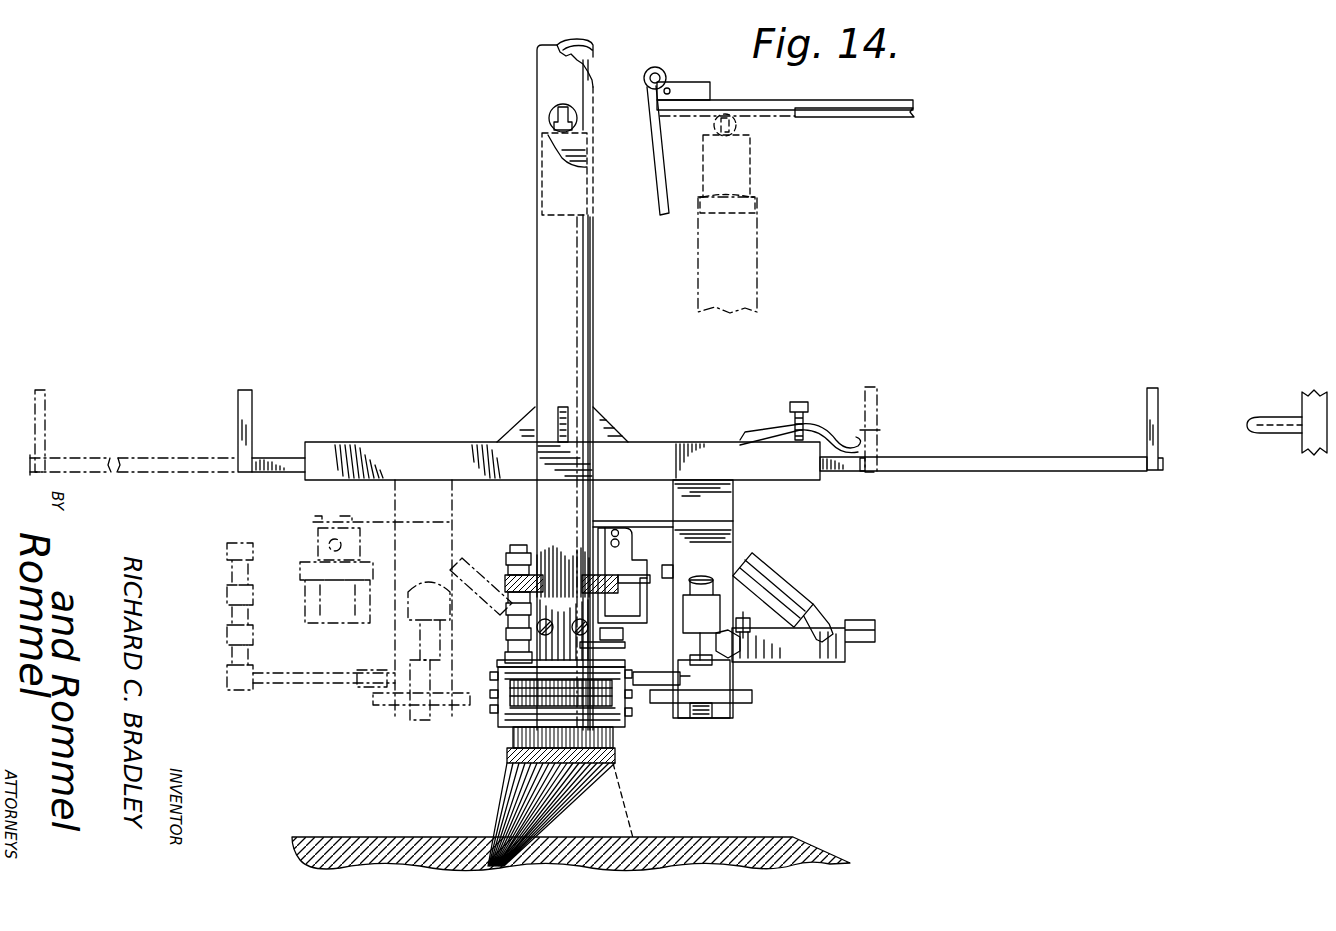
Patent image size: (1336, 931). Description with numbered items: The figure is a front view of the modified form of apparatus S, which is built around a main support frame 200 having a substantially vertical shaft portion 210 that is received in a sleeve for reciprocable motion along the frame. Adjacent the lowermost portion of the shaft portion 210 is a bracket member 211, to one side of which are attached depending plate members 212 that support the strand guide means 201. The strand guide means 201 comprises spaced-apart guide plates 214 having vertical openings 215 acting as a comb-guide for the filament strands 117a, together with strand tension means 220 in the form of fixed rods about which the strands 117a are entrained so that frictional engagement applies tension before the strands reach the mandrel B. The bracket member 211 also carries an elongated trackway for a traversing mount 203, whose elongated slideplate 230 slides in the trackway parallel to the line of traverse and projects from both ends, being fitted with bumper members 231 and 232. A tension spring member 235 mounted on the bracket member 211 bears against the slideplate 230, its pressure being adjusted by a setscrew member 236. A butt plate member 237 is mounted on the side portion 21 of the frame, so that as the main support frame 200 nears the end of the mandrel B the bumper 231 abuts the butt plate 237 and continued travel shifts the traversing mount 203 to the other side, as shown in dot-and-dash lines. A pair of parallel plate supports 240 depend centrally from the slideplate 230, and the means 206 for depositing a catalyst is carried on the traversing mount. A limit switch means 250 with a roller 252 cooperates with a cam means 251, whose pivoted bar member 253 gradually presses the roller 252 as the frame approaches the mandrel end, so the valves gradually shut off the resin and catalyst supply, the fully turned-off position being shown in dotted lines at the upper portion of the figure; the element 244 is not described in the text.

The modified form of invention S is at (449, 222).
The main support frame 200 is at (517, 318).
The vertical shaft portion 210 is at (594, 312).
The limit switch means 250 is at (566, 149).
The roller 252 is at (550, 118).
The pivoted bar member 253 is at (762, 105).
The cam means 251 is at (866, 96).
The depending plate members 212 is at (536, 491).
The bracket member 211 is at (609, 421).
The bumper member 232 is at (46, 412).
The slideplate 230 is at (160, 476).
The bumper member 231 is at (878, 398).
The tension spring member 235 is at (820, 430).
The setscrew member 236 is at (797, 400).
The traversing mount 203 is at (943, 426).
The butt plate member 237 is at (1268, 417).
The side portion 21 is at (1310, 446).
The parallel plate supports 240 is at (734, 500).
The vertical openings 215 is at (565, 570).
The guide plates 214 is at (625, 576).
The strand tension means 220 is at (498, 712).
The strand guide means 201 is at (493, 752).
The filament strands 117a is at (508, 805).
The mandrel B is at (836, 846).
The means for depositing a catalyst 206 is at (408, 710).
The mounting bar 244 is at (752, 703).